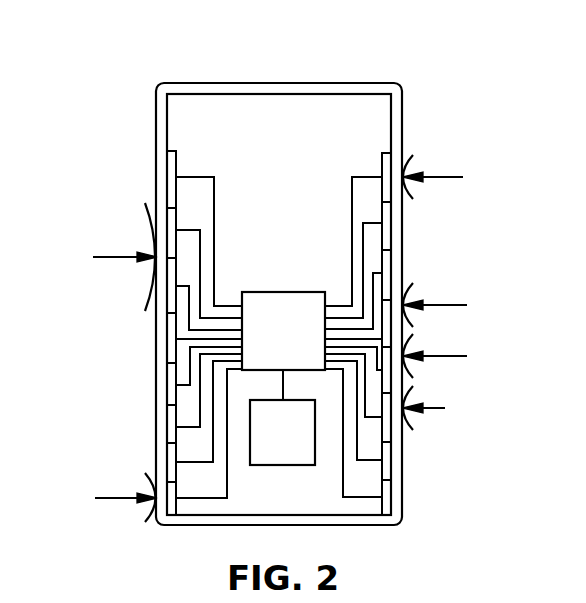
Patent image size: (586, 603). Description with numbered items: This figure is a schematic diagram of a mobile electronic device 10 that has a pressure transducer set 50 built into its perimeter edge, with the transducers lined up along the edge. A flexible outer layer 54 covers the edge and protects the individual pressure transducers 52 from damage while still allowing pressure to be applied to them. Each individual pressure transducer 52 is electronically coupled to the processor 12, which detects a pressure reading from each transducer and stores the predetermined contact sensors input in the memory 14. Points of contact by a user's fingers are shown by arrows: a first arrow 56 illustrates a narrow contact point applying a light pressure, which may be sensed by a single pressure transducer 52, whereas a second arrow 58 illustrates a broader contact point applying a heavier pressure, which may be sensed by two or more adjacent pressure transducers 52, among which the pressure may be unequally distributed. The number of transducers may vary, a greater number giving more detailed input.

The mobile electronic device 10 is at (268, 83).
The processor 12 is at (262, 292).
The memory 14 is at (270, 466).
The pressure transducer set 50 is at (188, 143).
The pressure transducer 52 is at (172, 176).
The flexible outer layer 54 is at (403, 109).
The first arrow 56 is at (440, 177).
The second arrow 58 is at (125, 256).